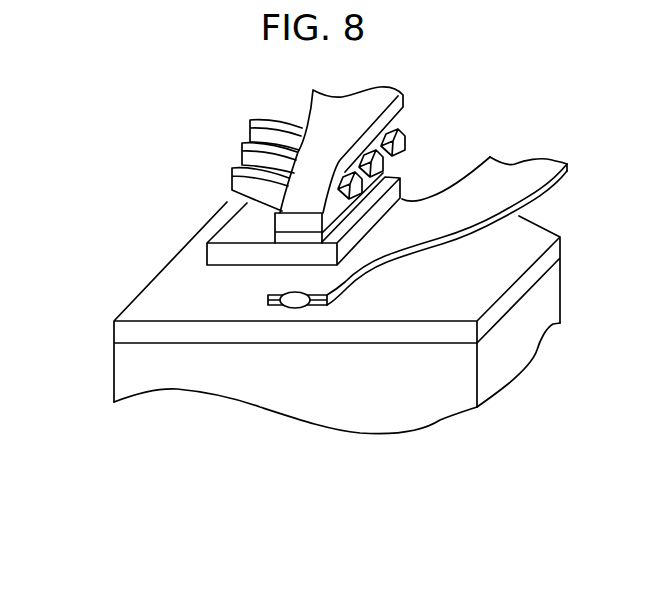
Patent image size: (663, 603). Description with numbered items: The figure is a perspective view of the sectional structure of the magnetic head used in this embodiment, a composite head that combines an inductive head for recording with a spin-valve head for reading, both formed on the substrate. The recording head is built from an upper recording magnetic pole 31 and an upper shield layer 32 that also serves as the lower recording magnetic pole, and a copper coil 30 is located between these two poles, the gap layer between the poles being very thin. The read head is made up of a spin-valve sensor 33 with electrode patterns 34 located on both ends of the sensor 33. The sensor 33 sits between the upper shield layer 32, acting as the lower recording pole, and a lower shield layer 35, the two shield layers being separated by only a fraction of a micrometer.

The coil 30 is at (250, 133).
The upper recording magnetic pole 31 is at (277, 219).
The upper shield layer 32 is at (207, 257).
The spin-valve sensor 33 is at (293, 308).
The electrode patterns 34 is at (283, 296).
The lower shield layer 35 is at (127, 332).